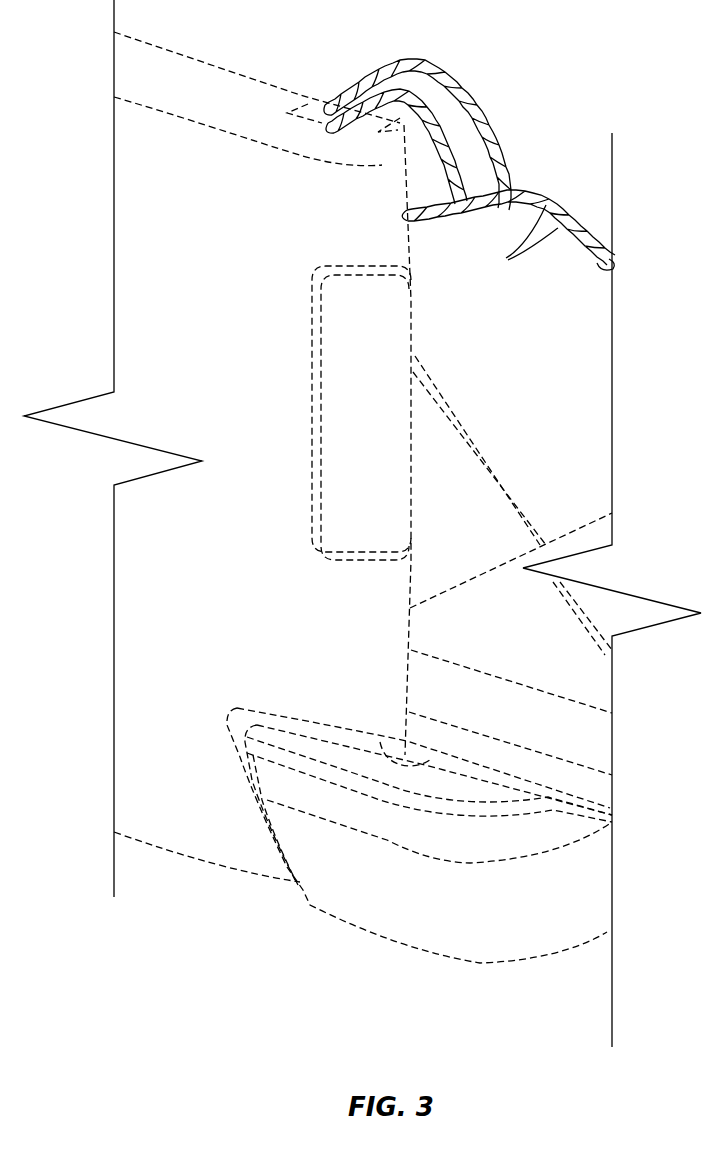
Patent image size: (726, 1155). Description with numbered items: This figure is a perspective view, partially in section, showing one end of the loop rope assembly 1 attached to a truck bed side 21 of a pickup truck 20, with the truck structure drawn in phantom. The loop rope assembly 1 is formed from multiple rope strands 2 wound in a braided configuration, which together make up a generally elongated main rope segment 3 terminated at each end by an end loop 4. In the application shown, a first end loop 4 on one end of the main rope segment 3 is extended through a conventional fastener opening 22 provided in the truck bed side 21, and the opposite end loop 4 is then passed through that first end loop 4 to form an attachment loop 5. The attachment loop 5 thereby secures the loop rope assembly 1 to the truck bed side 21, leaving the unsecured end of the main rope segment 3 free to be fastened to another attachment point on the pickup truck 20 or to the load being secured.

The loop rope assembly 1 is at (590, 105).
The rope strands 2 is at (521, 238).
The main rope segment 3 is at (592, 270).
The end loop 4 is at (480, 102).
The attachment loop 5 is at (413, 128).
The pickup truck 20 is at (207, 861).
The truck bed side 21 is at (196, 78).
The fastener opening 22 is at (313, 115).